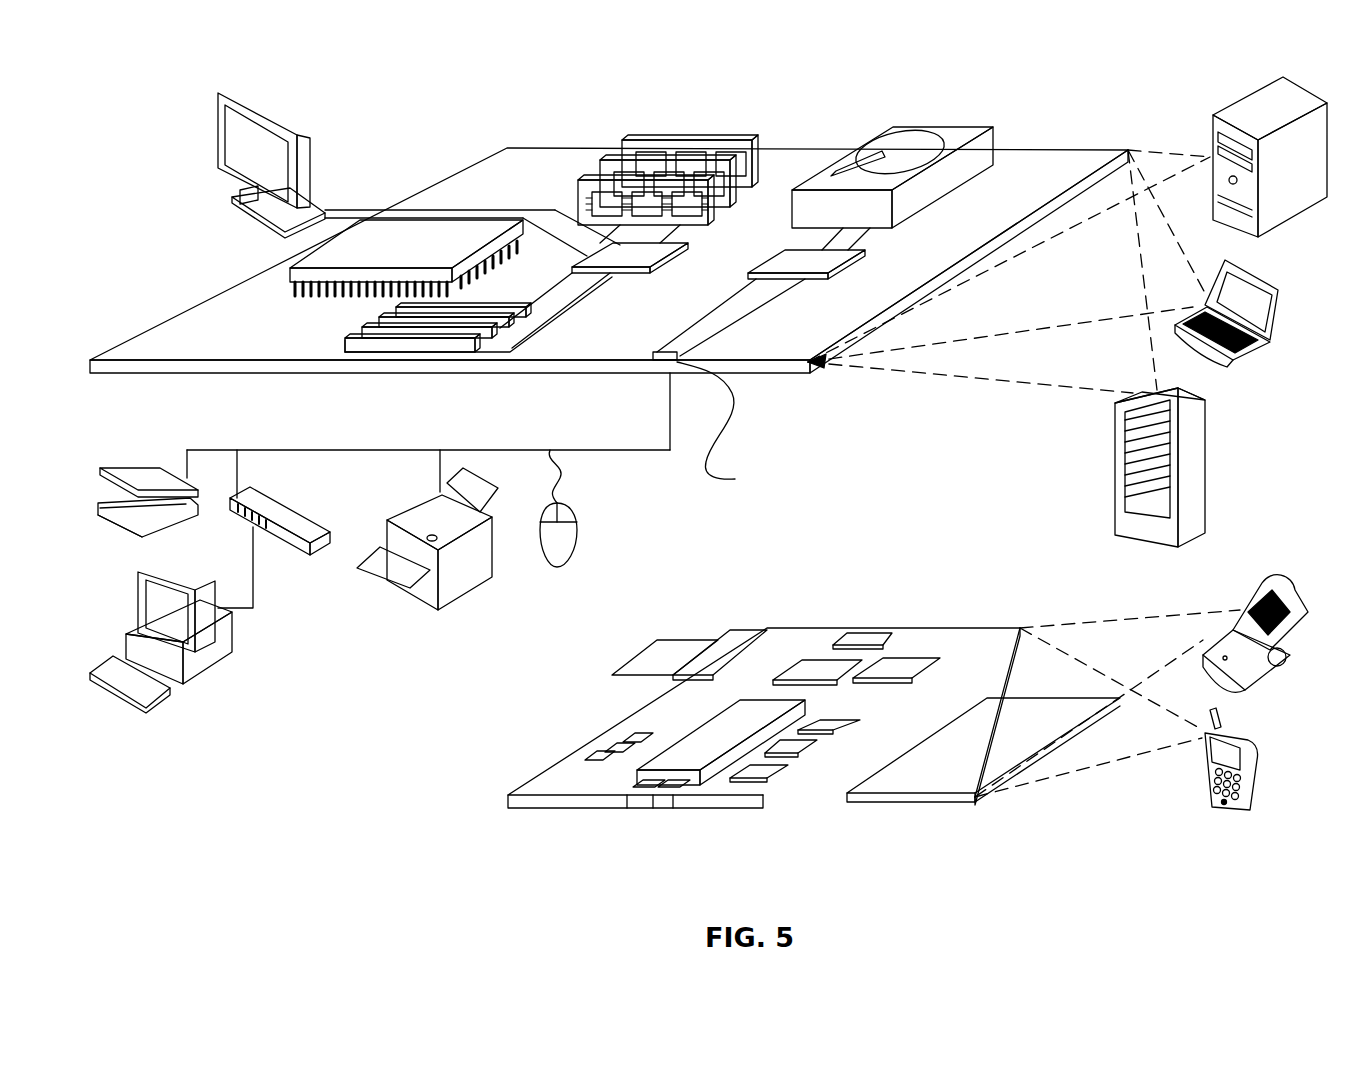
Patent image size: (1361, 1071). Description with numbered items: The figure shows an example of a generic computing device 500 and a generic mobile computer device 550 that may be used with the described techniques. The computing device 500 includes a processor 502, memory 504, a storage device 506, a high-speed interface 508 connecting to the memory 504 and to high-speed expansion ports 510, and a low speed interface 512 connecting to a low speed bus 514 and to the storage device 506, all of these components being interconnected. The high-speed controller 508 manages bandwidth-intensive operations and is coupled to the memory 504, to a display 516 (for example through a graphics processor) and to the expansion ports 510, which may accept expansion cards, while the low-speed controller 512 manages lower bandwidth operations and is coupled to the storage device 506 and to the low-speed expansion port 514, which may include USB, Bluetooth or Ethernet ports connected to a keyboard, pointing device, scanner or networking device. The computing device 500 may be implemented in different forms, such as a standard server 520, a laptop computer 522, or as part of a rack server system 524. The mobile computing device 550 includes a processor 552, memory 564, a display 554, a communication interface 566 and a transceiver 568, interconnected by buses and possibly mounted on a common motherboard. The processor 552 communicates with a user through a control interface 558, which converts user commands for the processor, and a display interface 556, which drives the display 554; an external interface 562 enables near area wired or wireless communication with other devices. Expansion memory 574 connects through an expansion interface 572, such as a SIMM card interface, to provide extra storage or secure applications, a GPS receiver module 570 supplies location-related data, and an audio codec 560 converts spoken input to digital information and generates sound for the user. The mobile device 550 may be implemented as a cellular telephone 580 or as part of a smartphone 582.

The computing device 500 is at (414, 118).
The processor 502 is at (288, 272).
The memory 504 is at (636, 138).
The storage device 506 is at (886, 134).
The high-speed interface 508 is at (603, 252).
The high-speed expansion ports 510 is at (368, 333).
The low speed interface 512 is at (790, 262).
The low speed bus 514 is at (716, 421).
The display 516 is at (220, 93).
The standard server 520 is at (1213, 132).
The laptop computer 522 is at (1284, 290).
The rack server system 524 is at (1117, 493).
The mobile computer device 550 is at (484, 809).
The processor 552 is at (693, 760).
The display 554 is at (940, 780).
The display interface 556 is at (763, 767).
The control interface 558 is at (802, 743).
The audio codec 560 is at (825, 723).
The external interface 562 is at (655, 800).
The memory 564 is at (600, 753).
The communication interface 566 is at (817, 667).
The transceiver 568 is at (900, 667).
The GPS receiver module 570 is at (868, 640).
The expansion interface 572 is at (733, 642).
The expansion memory 574 is at (658, 640).
The cellular telephone 580 is at (1262, 582).
The smartphone 582 is at (1200, 767).